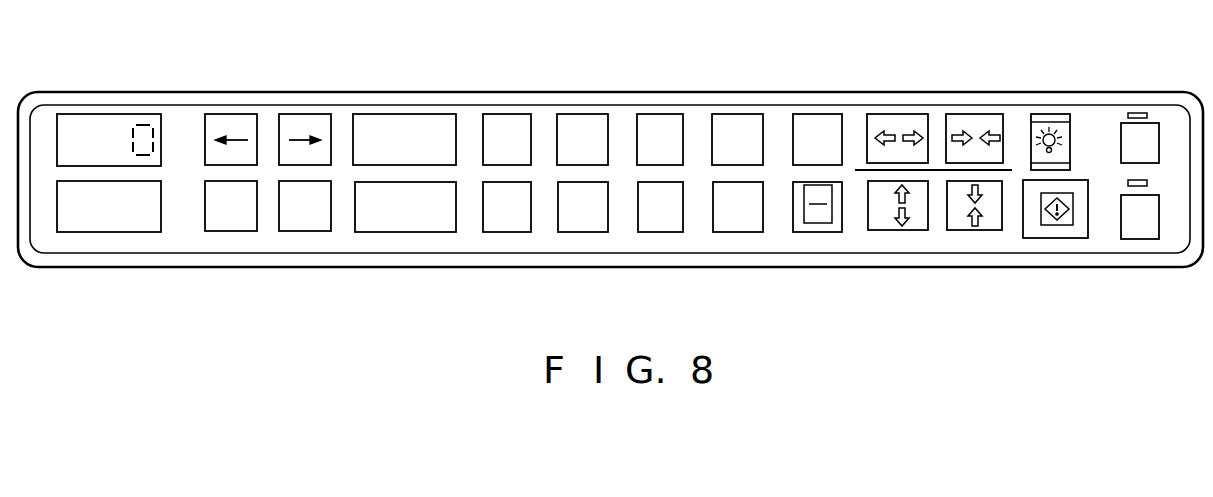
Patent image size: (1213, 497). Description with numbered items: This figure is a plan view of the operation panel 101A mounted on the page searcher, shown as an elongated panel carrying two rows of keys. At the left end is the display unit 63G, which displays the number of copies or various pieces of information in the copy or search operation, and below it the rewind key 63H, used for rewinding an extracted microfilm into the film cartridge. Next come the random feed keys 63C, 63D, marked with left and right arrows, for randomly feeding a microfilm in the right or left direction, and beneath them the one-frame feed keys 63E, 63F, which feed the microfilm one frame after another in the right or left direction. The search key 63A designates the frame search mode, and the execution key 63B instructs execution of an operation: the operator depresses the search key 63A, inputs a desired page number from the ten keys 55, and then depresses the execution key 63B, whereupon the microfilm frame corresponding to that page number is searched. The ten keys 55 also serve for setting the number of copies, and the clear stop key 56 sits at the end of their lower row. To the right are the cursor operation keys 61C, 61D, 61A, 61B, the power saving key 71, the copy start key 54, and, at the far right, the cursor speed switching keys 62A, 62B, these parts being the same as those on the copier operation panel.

The operation panel 101A is at (557, 92).
The display unit 63G is at (103, 118).
The rewind key 63H is at (147, 231).
The random feed key 63C is at (220, 118).
The random feed key 63D is at (312, 118).
The one-frame feed key 63E is at (247, 231).
The one-frame feed key 63F is at (311, 231).
The search key 63A is at (417, 118).
The execution key 63B is at (442, 231).
The ten keys 55 is at (601, 240).
The clear stop key 56 is at (825, 223).
The cursor operation key 61C is at (895, 110).
The cursor operation key 61D is at (978, 117).
The cursor operation key 61A is at (918, 229).
The cursor operation key 61B is at (993, 229).
The power saving key 71 is at (1057, 112).
The copy start key 54 is at (1075, 236).
The cursor speed switching key 62A is at (1160, 135).
The cursor speed switching key 62B is at (1160, 229).